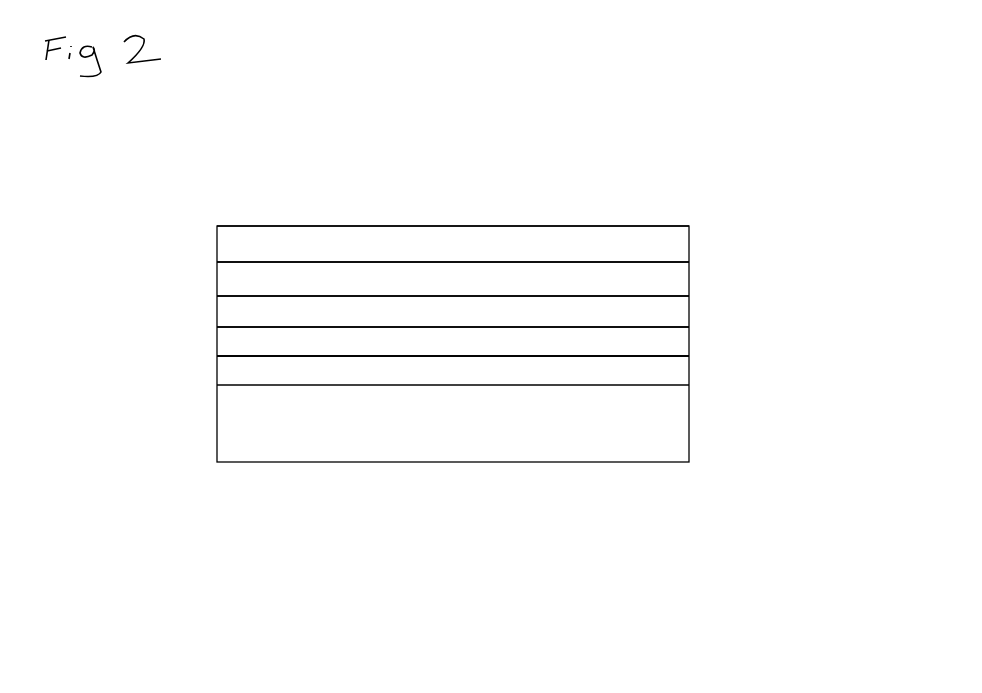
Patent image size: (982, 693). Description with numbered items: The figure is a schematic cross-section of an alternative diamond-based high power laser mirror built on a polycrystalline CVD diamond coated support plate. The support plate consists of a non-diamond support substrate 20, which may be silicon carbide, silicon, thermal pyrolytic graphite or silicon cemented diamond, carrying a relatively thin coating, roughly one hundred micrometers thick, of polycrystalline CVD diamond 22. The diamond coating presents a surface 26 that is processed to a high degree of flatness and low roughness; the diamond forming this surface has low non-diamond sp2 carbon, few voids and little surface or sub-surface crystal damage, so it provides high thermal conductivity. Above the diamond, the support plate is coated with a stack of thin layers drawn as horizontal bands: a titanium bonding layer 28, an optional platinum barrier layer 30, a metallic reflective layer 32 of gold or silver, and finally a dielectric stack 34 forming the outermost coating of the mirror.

The non-diamond support substrate 20 is at (618, 445).
The polycrystalline CVD diamond 22 is at (683, 370).
The surface 26 is at (468, 357).
The titanium bonding layer 28 is at (683, 340).
The platinum barrier layer 30 is at (225, 308).
The metallic reflective layer 32 is at (685, 278).
The dielectric stack 34 is at (230, 247).